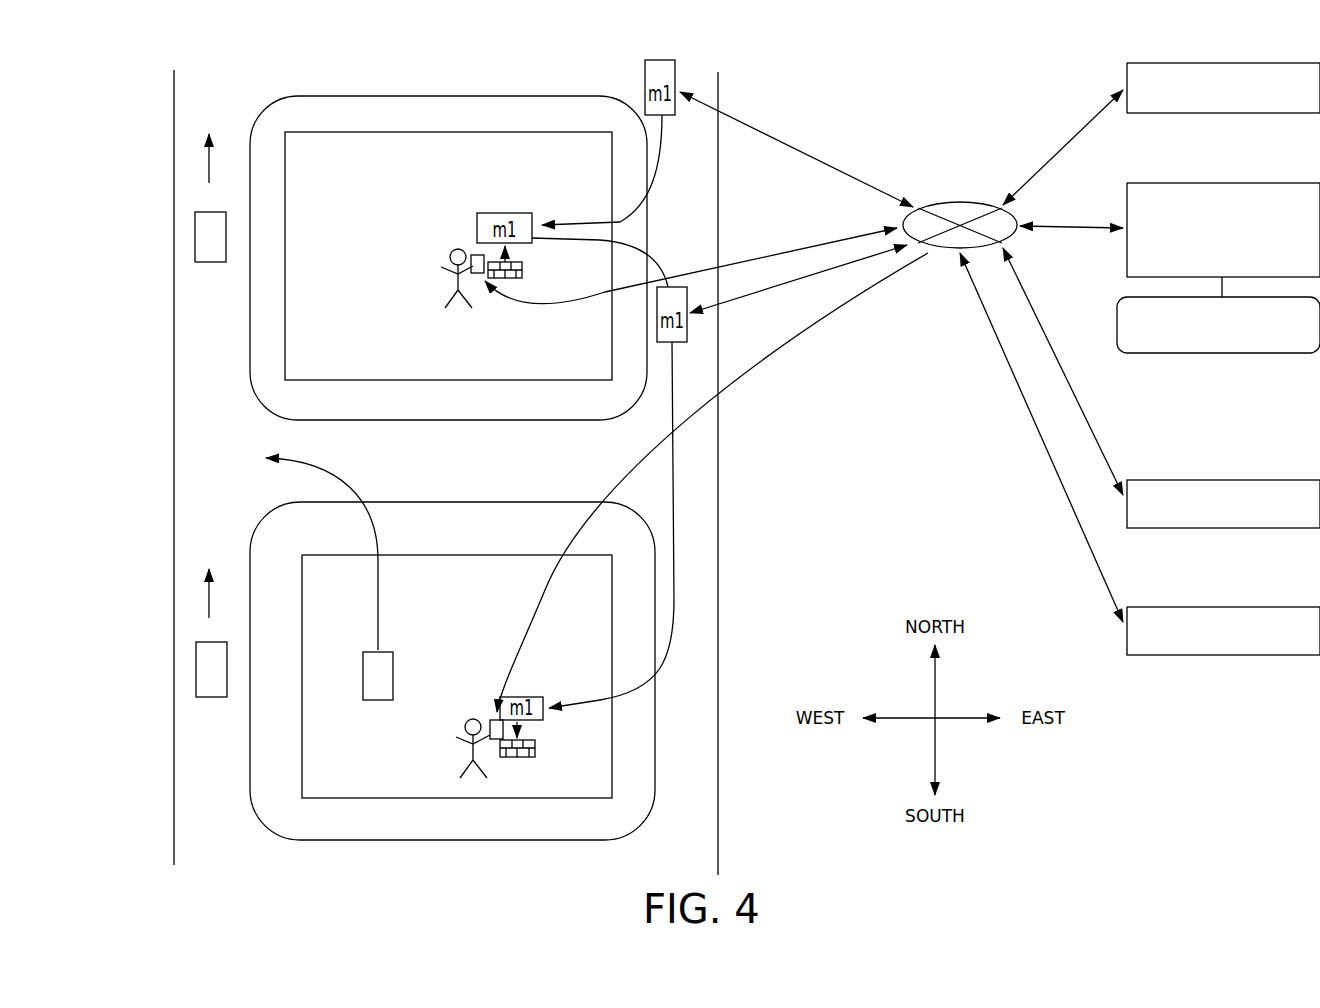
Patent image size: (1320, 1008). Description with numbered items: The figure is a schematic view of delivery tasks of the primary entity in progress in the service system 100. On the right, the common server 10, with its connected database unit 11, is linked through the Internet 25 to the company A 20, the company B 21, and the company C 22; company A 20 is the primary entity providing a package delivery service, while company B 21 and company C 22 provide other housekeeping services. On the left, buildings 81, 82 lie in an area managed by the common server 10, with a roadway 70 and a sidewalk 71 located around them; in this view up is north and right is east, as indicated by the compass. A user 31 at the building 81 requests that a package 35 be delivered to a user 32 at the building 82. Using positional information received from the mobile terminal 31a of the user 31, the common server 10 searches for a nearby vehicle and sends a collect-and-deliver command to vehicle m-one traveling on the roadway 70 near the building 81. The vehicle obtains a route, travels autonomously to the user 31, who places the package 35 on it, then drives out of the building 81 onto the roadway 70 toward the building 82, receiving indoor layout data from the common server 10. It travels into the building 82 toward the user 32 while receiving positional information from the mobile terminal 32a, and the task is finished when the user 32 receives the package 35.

The service system 100 is at (843, 64).
The common server 10 is at (1180, 182).
The database unit 11 is at (1207, 352).
The company A 20 is at (1180, 62).
The company B 21 is at (1197, 480).
The company C 22 is at (1197, 607).
The Internet 25 is at (972, 202).
The user 31 is at (455, 285).
The mobile terminal 31a is at (478, 252).
The user 32 is at (455, 758).
The mobile terminal 32a is at (490, 720).
The package 35 is at (522, 270).
The roadway 70 is at (200, 413).
The sidewalk 71 is at (258, 318).
The building 81 is at (392, 132).
The building 82 is at (353, 800).